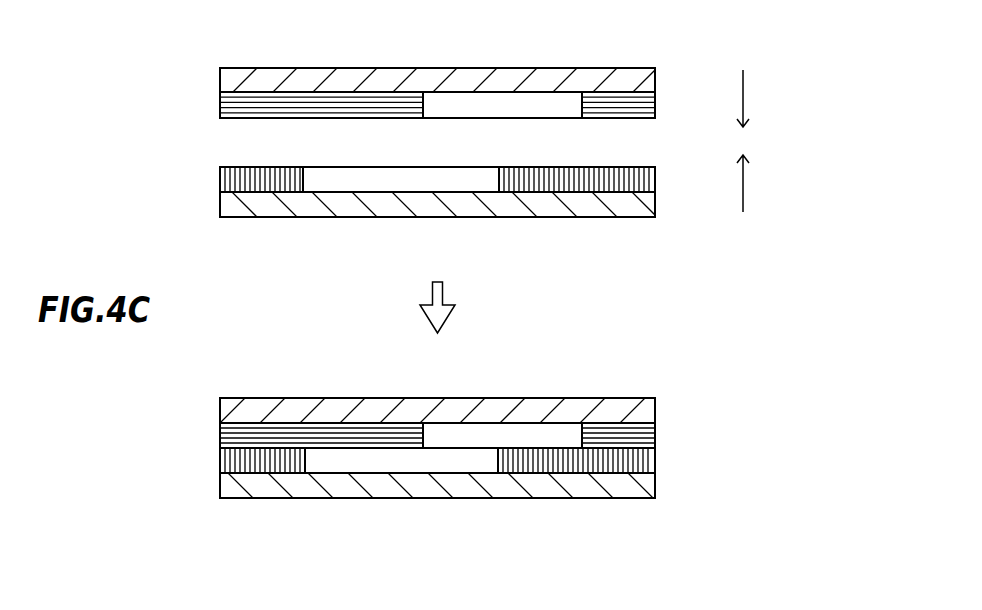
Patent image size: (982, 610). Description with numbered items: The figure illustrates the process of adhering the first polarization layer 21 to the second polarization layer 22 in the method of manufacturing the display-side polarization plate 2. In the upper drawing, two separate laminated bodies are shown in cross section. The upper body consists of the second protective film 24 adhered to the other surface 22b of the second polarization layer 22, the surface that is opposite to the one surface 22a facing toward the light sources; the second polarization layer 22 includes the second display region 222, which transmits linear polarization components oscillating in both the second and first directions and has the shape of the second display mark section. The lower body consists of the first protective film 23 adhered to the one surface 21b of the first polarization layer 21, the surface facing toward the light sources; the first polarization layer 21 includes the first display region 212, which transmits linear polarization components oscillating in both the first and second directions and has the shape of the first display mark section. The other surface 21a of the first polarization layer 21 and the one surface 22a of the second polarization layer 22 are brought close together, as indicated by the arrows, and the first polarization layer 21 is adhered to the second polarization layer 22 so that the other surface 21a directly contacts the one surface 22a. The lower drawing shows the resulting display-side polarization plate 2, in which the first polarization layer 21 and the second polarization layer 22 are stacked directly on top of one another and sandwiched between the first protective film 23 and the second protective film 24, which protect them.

The display-side polarization plate 2 is at (729, 395).
The first polarization layer 21 is at (648, 182).
The other surface of the first polarization layer 21a is at (518, 168).
The one surface of the first polarization layer 21b is at (242, 192).
The first display region 212 is at (428, 183).
The second polarization layer 22 is at (645, 100).
The one surface of the second polarization layer 22a is at (592, 120).
The other surface of the second polarization layer 22b is at (288, 92).
The second display region 222 is at (503, 103).
The first protective film 23 is at (648, 206).
The second protective film 24 is at (645, 81).